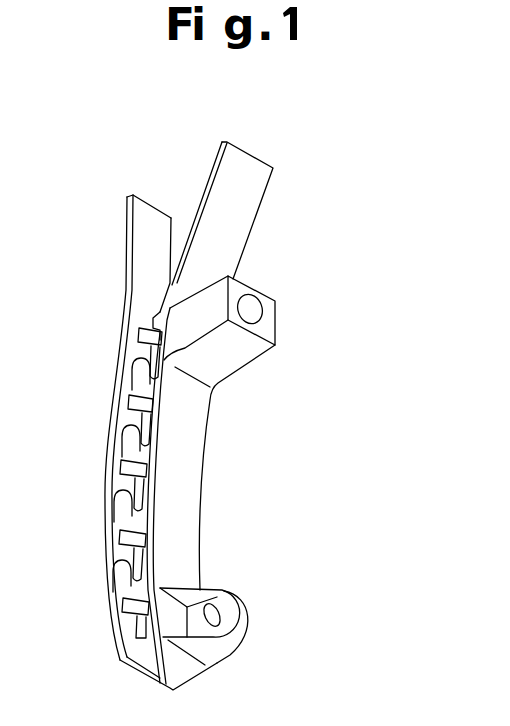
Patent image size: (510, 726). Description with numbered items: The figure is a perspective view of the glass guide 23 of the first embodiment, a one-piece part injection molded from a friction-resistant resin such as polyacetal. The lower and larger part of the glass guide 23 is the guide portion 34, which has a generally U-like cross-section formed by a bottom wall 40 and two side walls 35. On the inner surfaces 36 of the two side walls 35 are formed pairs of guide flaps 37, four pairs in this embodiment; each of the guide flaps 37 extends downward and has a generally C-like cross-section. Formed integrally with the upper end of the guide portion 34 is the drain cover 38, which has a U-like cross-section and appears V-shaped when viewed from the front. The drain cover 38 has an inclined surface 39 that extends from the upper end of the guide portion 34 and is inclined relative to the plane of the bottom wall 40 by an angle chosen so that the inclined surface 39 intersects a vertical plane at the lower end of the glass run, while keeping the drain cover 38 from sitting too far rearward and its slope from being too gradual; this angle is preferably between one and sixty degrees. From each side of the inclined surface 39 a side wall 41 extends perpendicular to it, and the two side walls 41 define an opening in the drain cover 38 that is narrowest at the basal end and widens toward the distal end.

The glass guide 23 is at (371, 216).
The guide portion 34 is at (199, 486).
The side walls 35 is at (162, 533).
The inner surfaces 36 is at (122, 484).
The guide flaps 37 is at (138, 418).
The drain cover 38 is at (250, 222).
The inclined surface 39 is at (198, 202).
The bottom wall 40 is at (183, 672).
The side wall 41 is at (140, 220).